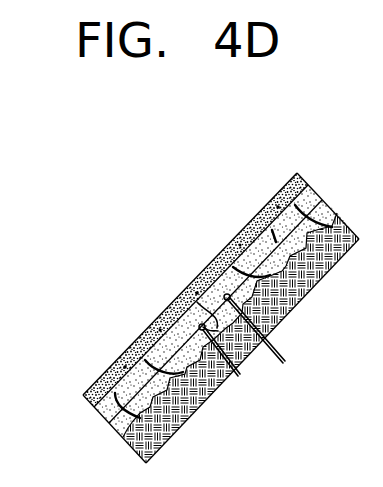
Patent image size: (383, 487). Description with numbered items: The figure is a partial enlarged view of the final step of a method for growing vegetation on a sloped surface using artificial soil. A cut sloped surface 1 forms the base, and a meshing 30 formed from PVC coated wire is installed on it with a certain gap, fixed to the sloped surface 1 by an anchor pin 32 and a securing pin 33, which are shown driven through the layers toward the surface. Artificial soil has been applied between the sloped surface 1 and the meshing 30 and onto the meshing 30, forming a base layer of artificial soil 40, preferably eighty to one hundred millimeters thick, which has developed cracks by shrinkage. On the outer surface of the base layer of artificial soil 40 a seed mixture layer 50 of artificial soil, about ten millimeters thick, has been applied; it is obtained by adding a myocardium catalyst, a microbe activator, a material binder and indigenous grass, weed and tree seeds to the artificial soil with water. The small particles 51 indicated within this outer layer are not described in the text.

The sloped surface 1 is at (305, 292).
The meshing 30 is at (252, 215).
The base layer of artificial soil 40 is at (110, 380).
The seed mixture layer of artificial soil 50 is at (177, 293).
The particles 51 is at (277, 206).
The anchor pin 32 is at (286, 360).
The securing pin 33 is at (239, 377).